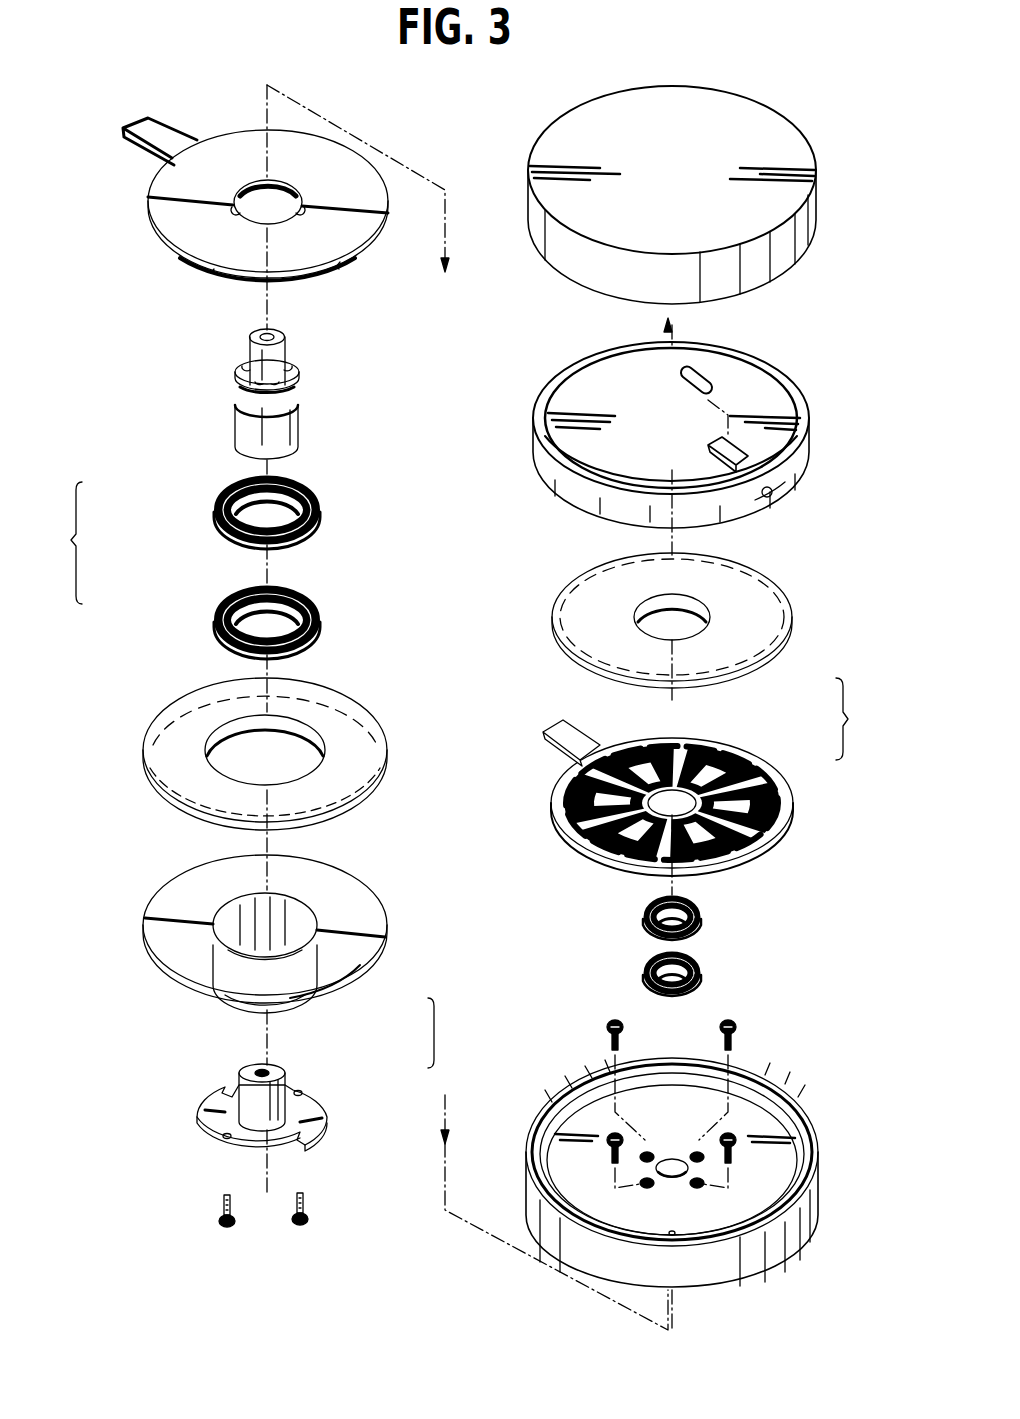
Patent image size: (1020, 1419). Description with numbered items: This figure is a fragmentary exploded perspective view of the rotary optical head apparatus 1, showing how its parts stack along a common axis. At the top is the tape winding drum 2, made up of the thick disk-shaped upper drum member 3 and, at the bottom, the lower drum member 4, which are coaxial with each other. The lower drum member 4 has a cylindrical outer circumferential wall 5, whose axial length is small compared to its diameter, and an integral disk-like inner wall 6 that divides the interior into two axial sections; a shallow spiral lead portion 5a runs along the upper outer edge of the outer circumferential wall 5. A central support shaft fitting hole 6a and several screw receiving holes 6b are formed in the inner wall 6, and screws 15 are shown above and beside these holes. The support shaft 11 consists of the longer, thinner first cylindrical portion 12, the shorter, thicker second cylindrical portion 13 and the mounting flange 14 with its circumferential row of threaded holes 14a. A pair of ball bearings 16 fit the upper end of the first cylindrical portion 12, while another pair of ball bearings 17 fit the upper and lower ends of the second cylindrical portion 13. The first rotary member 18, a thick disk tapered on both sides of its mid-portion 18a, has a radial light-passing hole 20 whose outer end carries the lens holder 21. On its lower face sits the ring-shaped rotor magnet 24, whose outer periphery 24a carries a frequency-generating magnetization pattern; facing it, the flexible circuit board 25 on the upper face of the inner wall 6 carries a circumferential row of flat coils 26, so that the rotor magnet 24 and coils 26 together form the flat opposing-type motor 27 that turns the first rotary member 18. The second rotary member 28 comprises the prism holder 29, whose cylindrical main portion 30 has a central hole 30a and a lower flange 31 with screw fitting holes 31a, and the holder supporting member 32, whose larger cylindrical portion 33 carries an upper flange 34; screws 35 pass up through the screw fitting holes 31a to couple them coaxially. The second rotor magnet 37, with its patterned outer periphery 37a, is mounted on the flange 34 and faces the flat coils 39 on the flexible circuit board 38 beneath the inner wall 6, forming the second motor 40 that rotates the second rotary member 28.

The rotary optical head apparatus 1 is at (122, 1045).
The tape winding drum 2 is at (700, 185).
The upper drum member 3 is at (765, 112).
The lower drum member 4 is at (691, 1168).
The outer circumferential wall 5 is at (691, 1192).
The lead portion 5a is at (678, 1240).
The inner wall 6 is at (679, 1149).
The support shaft fitting hole 6a is at (668, 1178).
The screw receiving holes 6b is at (647, 1150).
The support shaft 11 is at (272, 391).
The first cylindrical portion 12 is at (297, 352).
The second cylindrical portion 13 is at (298, 440).
The mounting flange 14 is at (302, 377).
The threaded holes 14a is at (250, 358).
The screws 15 is at (607, 1030).
The ball bearings 16 is at (705, 915).
The ball bearings 17 is at (320, 508).
The first rotary member 18 is at (698, 423).
The mid-portion 18a is at (793, 470).
The light-passing hole 20 is at (775, 495).
The lens holder 21 is at (702, 362).
The rotor magnet 24 is at (707, 626).
The outer periphery 24a is at (790, 574).
The flexible circuit board 25 is at (765, 748).
The flat coils 26 is at (648, 735).
The motor 27 is at (692, 788).
The second rotary member 28 is at (446, 1033).
The prism holder 29 is at (282, 1105).
The main portion 30 is at (254, 1078).
The hole 30a is at (262, 1072).
The flange 31 is at (252, 1118).
The screw fitting holes 31a is at (300, 1092).
The holder supporting member 32 is at (355, 1000).
The cylindrical portion 33 is at (238, 1013).
The flange 34 is at (297, 949).
The screws 35 is at (222, 1212).
The rotor magnet 37 is at (271, 701).
The outer periphery 37a is at (378, 718).
The flexible circuit board 38 is at (188, 245).
The flat coils 39 is at (270, 186).
The motor 40 is at (60, 543).